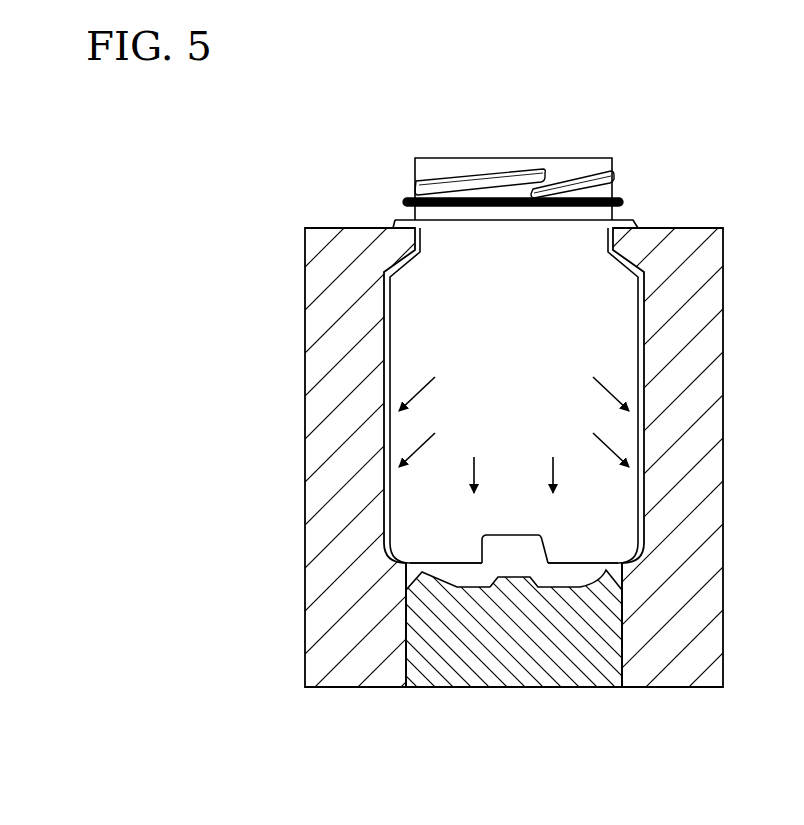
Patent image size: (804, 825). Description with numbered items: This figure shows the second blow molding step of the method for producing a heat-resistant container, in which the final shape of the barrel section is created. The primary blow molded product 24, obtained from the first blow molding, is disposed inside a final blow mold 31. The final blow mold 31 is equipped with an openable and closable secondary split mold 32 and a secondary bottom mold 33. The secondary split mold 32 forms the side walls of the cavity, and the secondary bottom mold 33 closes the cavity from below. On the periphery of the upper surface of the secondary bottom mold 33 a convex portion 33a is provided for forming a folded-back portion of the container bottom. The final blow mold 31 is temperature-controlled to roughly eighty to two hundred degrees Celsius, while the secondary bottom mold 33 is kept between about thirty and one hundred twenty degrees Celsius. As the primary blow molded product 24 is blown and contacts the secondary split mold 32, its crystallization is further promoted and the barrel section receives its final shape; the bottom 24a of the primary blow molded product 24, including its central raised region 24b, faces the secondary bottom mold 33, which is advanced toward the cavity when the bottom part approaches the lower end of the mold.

The primary blow molded product 24 is at (421, 449).
The bottom portion of container 24a is at (443, 563).
The central raised portion of container bottom 24b is at (488, 553).
The final blow mold 31 is at (506, 431).
The secondary split mold 32 is at (379, 243).
The secondary bottom mold 33 is at (554, 662).
The convex portion 33a is at (622, 582).